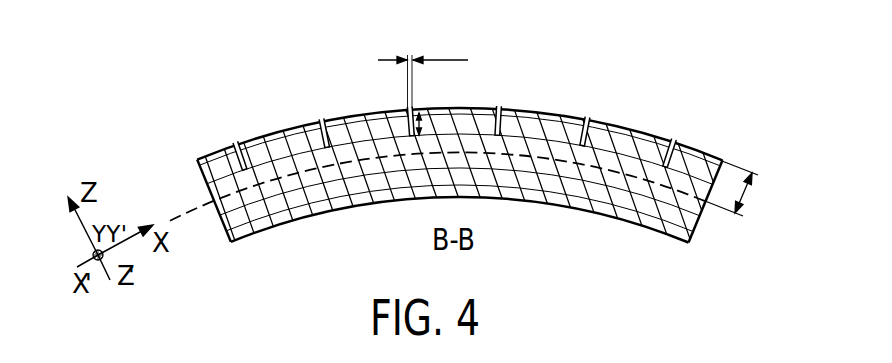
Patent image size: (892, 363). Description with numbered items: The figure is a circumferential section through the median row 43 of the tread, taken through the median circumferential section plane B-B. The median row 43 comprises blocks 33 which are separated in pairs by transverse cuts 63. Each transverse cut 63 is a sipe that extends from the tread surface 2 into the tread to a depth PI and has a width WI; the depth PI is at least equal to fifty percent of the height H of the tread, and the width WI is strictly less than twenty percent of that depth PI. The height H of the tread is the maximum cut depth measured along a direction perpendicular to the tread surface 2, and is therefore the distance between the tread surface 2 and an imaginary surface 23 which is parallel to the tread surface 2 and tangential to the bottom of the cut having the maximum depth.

The tread surface 2 is at (421, 132).
The imaginary surface 23 is at (687, 197).
The blocks 33 is at (551, 114).
The median row 43 is at (202, 173).
The transverse cuts 63 is at (320, 120).
The width WI is at (425, 68).
The depth PI is at (421, 127).
The height of the tread H is at (737, 189).